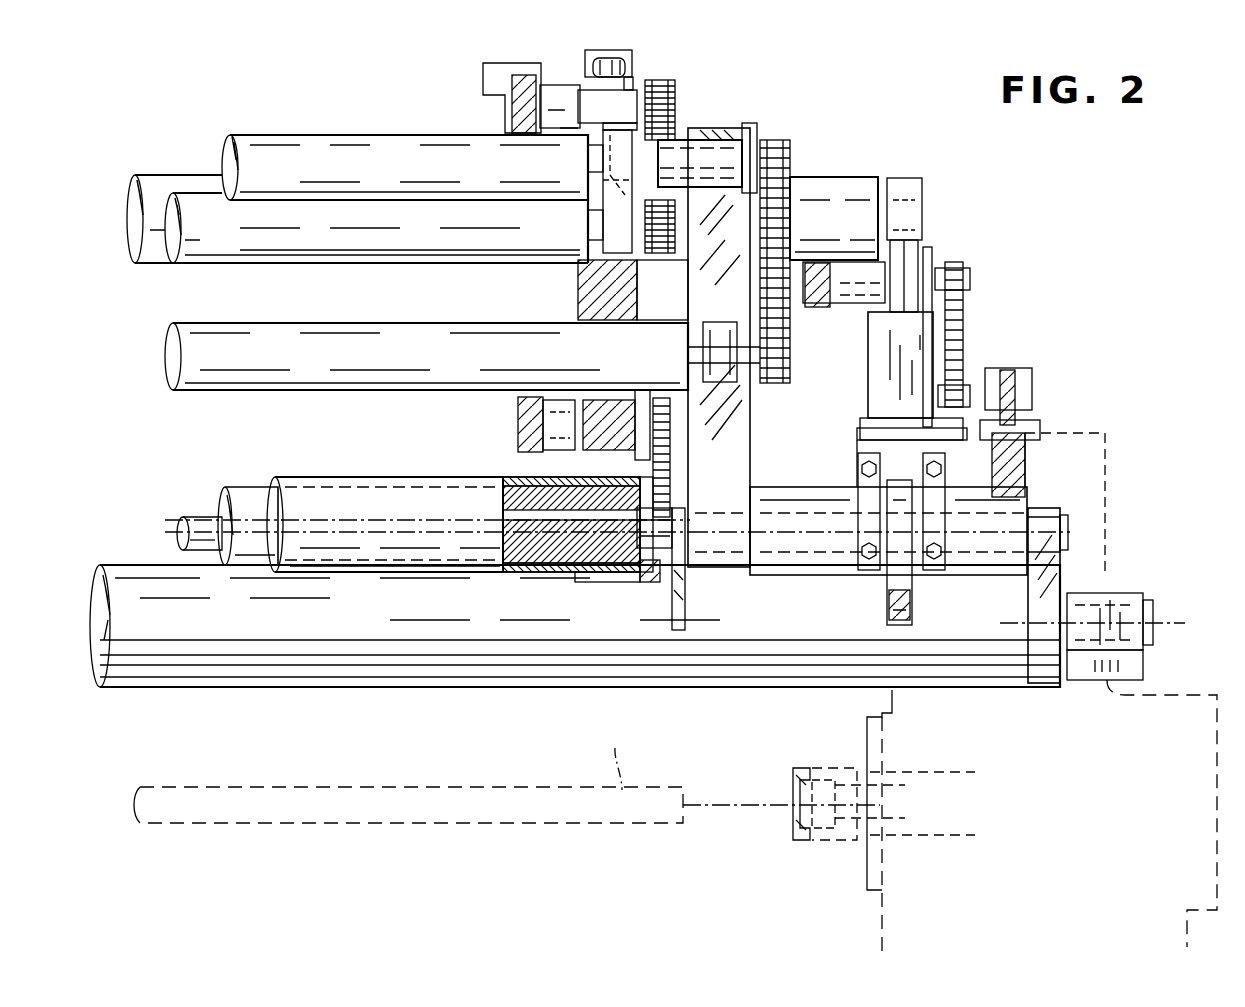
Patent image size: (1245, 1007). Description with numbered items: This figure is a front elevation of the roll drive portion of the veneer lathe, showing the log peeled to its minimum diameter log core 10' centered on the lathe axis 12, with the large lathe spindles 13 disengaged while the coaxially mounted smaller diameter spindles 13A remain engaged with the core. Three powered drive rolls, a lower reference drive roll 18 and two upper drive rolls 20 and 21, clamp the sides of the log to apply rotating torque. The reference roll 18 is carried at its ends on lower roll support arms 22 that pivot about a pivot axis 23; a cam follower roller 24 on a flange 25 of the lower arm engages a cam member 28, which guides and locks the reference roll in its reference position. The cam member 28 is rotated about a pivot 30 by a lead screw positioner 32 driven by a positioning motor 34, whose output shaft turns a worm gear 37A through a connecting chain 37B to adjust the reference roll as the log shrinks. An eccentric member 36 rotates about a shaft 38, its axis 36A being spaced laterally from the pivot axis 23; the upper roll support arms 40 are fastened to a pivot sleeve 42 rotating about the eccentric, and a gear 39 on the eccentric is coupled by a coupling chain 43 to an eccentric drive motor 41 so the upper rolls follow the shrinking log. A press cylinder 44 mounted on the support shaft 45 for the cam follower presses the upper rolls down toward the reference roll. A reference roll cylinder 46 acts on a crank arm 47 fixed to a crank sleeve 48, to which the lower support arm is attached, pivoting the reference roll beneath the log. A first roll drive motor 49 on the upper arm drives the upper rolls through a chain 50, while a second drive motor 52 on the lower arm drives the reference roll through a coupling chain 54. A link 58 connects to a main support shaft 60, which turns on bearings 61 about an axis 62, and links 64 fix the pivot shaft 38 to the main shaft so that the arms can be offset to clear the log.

The minimum diameter log core 10' is at (612, 756).
The lathe axis 12 is at (723, 805).
The lathe spindles 13 is at (812, 845).
The smaller diameter spindles 13A is at (795, 832).
The lower reference drive roll 18 is at (275, 323).
The upper drive roll 20 is at (305, 135).
The upper drive roll 21 is at (203, 195).
The lower roll support arms 22 is at (750, 418).
The pivot axis 23 is at (808, 530).
The cam follower roller 24 is at (922, 210).
The flange 25 is at (710, 280).
The cam member 28 is at (912, 615).
The pivot 30 is at (940, 488).
The lead screw positioner 32 is at (870, 345).
The positioning motor 34 is at (858, 265).
The eccentric member 36 is at (242, 487).
The eccentric axis 36A is at (432, 520).
The worm gear 37A is at (965, 388).
The connecting chain 37B is at (963, 330).
The shaft 38 is at (195, 517).
The gear 39 is at (680, 505).
The upper roll support arms 40 is at (580, 295).
The eccentric drive motor 41 is at (520, 425).
The pivot sleeve 42 is at (290, 477).
The coupling chain 43 is at (675, 478).
The press cylinder 44 is at (632, 65).
The support shaft 45 is at (155, 175).
The reference roll cylinder 46 is at (1033, 390).
The crank arm 47 is at (1027, 450).
The crank sleeve 48 is at (812, 575).
The first roll drive motor 49 is at (560, 90).
The chain 50 is at (680, 115).
The second drive motor 52 is at (718, 148).
The coupling chain 54 is at (790, 195).
The link 58 is at (1055, 570).
The main support shaft 60 is at (735, 688).
The bearings 61 is at (1153, 615).
The axis 62 is at (1135, 600).
The links 64 is at (688, 600).